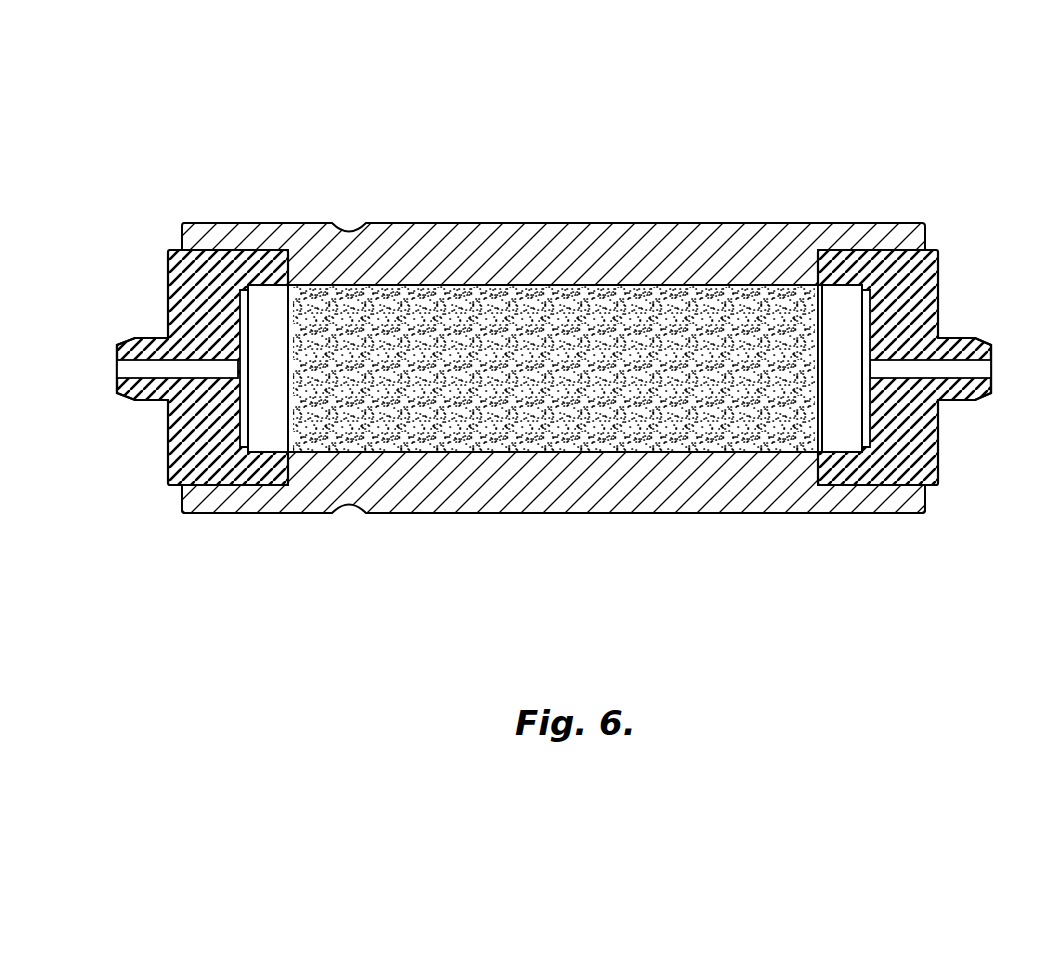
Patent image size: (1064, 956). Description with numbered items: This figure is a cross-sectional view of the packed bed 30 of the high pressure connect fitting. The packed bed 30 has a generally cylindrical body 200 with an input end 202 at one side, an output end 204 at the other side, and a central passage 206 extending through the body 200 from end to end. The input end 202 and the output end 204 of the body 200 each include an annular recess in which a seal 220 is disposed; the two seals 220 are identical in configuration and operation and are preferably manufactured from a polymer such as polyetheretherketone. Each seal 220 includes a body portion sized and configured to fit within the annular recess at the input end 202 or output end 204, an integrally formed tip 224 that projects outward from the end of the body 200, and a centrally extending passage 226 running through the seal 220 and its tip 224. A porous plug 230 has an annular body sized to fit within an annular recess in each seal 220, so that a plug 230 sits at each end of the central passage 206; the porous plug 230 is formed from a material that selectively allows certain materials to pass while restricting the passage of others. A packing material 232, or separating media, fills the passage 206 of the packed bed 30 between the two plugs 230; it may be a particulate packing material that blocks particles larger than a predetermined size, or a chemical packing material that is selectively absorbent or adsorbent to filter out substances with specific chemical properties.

The packed bed 30 is at (579, 299).
The body 200 is at (618, 222).
The input end 202 is at (178, 502).
The output end 204 is at (927, 500).
The central passage 206 is at (445, 438).
The seal 220 is at (168, 272).
The tip 224 is at (147, 338).
The centrally extending passage 226 is at (148, 368).
The porous plug 230 is at (272, 315).
The packing material 232 is at (502, 345).